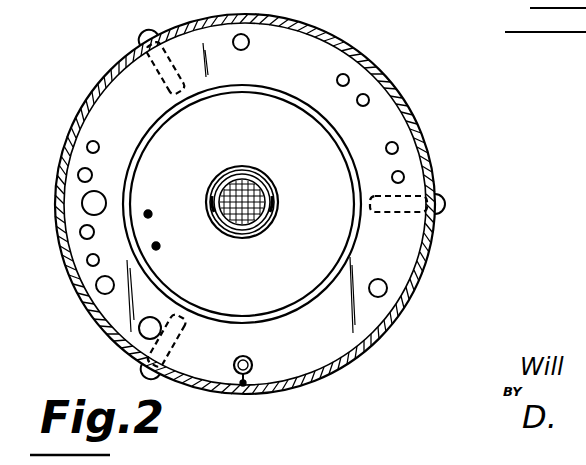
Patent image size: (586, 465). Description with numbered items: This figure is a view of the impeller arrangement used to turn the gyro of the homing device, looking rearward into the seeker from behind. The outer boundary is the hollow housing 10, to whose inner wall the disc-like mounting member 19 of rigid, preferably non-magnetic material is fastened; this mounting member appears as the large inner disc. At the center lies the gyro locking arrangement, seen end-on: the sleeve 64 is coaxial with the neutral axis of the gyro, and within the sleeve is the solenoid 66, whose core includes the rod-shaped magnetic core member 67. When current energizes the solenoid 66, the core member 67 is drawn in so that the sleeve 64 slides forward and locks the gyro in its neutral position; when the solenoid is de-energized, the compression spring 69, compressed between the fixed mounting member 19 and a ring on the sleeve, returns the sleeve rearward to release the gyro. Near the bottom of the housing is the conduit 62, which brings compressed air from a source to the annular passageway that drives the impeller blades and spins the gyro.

The hollow housing 10 is at (358, 50).
The disc-like mounting member 19 is at (273, 52).
The conduit 62 is at (255, 363).
The sleeve 64 is at (270, 177).
The solenoid 66 is at (267, 227).
The magnetic core member 67 is at (217, 180).
The compression spring 69 is at (265, 217).